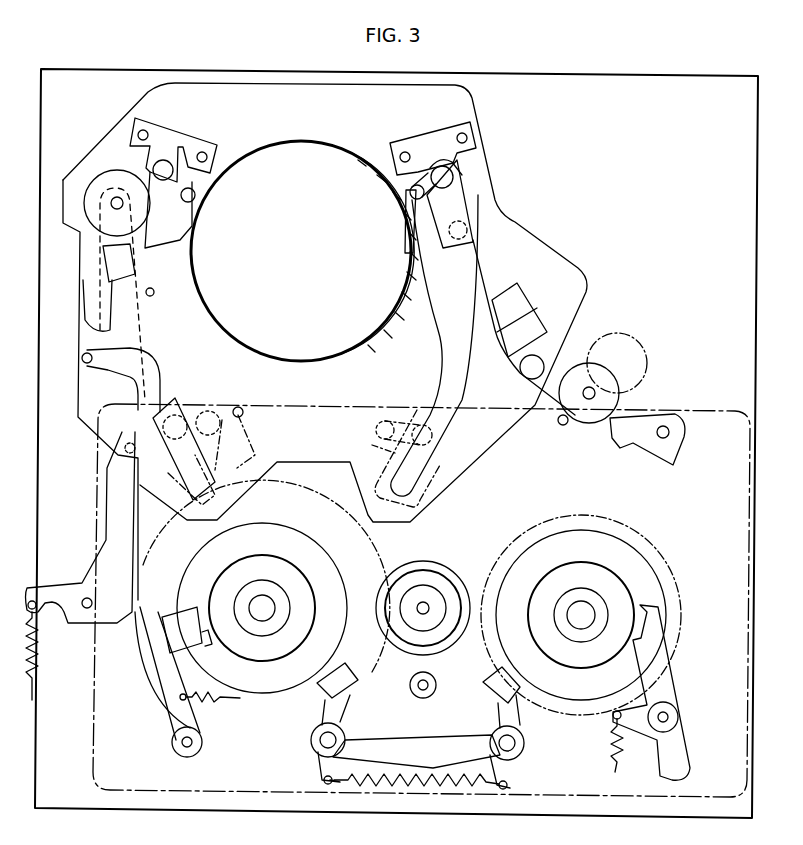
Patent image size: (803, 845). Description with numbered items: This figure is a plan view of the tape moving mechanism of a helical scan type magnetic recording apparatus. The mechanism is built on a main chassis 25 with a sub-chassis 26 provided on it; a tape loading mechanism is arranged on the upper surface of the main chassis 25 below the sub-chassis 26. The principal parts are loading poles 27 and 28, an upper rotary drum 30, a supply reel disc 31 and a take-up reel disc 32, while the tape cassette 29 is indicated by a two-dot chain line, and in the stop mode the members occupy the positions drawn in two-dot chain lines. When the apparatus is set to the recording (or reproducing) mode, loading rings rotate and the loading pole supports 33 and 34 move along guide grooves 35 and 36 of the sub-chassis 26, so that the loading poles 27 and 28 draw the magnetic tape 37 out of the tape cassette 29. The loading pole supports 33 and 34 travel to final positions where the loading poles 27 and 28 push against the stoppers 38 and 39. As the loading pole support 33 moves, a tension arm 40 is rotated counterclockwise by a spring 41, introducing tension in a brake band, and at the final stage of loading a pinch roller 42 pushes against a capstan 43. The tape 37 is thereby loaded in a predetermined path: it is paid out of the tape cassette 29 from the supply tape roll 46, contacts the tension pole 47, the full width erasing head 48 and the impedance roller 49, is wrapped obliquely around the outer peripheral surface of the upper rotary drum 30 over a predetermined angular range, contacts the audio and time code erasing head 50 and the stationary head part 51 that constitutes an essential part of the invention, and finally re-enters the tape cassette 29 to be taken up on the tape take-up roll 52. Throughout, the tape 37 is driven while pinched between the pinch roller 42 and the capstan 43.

The main chassis 25 is at (630, 76).
The sub-chassis 26 is at (537, 238).
The loading pole 27 is at (164, 182).
The loading pole 28 is at (457, 190).
The tape cassette 29 is at (707, 412).
The upper rotary drum 30 is at (296, 146).
The supply reel disc 31 is at (306, 546).
The take-up reel disc 32 is at (550, 540).
The loading pole support 33 is at (176, 230).
The loading pole support 34 is at (446, 248).
The guide groove 35 is at (154, 294).
The guide groove 36 is at (452, 336).
The magnetic tape 37 is at (484, 284).
The stopper 38 is at (173, 132).
The stopper 39 is at (425, 138).
The tension arm 40 is at (110, 478).
The spring 41 is at (40, 660).
The pinch roller 42 is at (577, 358).
The capstan 43 is at (560, 424).
The supply tape roll 46 is at (220, 737).
The tension pole 47 is at (82, 357).
The full width erasing head 48 is at (101, 269).
The impedance roller 49 is at (100, 178).
The audio and time code erasing head 50 is at (522, 300).
The stationary head part 51 is at (540, 320).
The tape take-up roll 52 is at (597, 512).